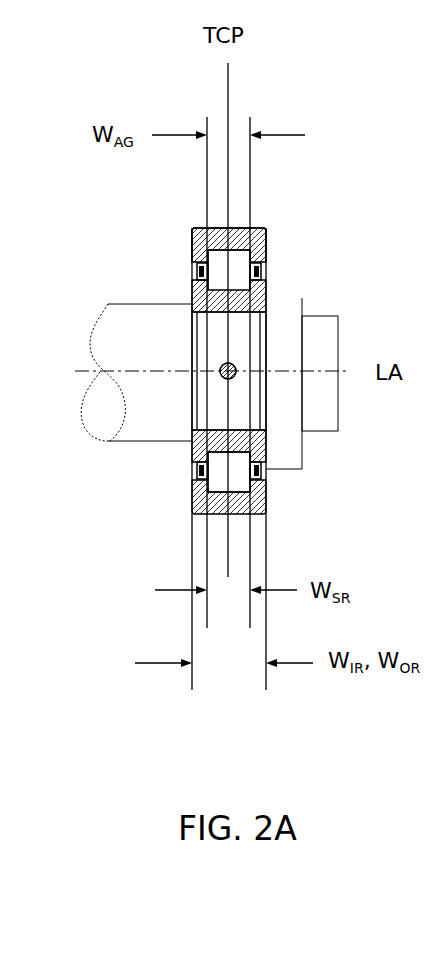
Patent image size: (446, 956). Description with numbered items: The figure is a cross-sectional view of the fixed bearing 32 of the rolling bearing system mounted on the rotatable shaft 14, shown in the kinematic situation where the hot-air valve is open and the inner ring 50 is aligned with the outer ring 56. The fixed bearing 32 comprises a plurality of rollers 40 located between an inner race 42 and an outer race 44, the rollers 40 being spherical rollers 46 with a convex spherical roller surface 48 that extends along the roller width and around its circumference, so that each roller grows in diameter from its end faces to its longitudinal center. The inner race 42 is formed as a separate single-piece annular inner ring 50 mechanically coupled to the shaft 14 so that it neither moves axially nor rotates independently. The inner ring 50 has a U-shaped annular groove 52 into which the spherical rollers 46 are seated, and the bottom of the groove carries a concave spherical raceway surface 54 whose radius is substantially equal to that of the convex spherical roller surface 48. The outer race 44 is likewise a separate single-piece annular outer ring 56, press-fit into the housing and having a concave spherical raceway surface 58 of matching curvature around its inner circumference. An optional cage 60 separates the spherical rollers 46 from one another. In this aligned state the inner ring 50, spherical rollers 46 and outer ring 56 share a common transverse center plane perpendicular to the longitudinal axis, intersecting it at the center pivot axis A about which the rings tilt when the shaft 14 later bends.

The rotatable shaft 14 is at (160, 417).
The fixed bearing 32 is at (230, 407).
The rollers 40 is at (223, 364).
The spherical rollers 46 is at (258, 243).
The inner race 42 is at (223, 371).
The inner ring 50 is at (260, 300).
The outer race 44 is at (283, 214).
The outer ring 56 is at (243, 226).
The convex spherical roller surface 48 is at (228, 300).
The concave spherical raceway surface 58 is at (235, 492).
The U-shaped annular groove 52 is at (200, 282).
The cage 60 is at (190, 258).
The concave spherical raceway surface 54 is at (232, 458).
The center (pivot) axis A is at (236, 377).